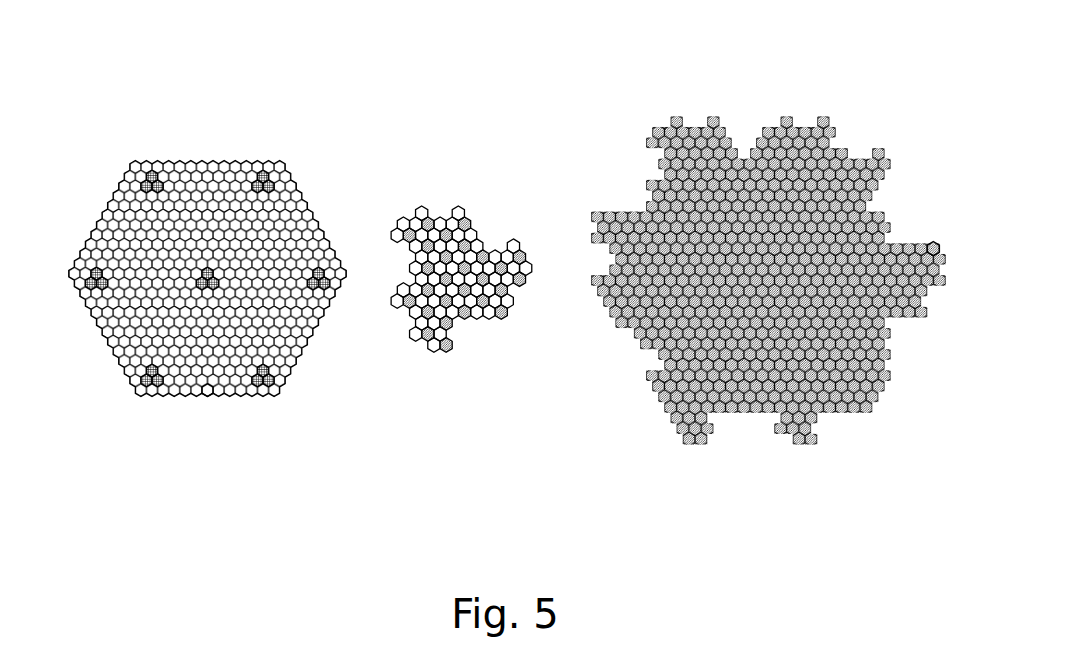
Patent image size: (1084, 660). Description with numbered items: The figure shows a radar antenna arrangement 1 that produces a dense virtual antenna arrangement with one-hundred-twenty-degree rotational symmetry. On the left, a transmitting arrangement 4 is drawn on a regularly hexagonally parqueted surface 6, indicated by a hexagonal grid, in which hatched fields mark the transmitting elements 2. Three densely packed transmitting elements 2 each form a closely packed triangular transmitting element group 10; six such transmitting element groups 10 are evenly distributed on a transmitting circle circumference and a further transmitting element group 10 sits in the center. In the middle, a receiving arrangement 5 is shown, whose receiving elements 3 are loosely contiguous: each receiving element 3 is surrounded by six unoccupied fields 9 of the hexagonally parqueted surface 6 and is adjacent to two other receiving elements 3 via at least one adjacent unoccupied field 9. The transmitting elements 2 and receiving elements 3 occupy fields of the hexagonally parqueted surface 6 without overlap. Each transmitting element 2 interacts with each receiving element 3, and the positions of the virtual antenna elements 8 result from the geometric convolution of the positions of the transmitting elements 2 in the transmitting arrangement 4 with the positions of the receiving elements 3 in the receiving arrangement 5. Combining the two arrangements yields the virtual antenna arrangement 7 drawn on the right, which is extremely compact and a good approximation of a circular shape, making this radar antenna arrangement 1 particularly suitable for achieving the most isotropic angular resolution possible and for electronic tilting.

The radar antenna arrangement 1 is at (306, 117).
The transmitting element 2 is at (264, 178).
The receiving element 3 is at (504, 314).
The transmitting arrangement 4 is at (316, 181).
The receiving arrangement 5 is at (471, 164).
The regularly hexagonally parqueted surface 6 is at (207, 398).
The virtual antenna arrangement 7 is at (773, 102).
The virtual antenna element 8 is at (934, 236).
The unoccupied field 9 is at (482, 241).
The transmitting element group 10 is at (90, 298).